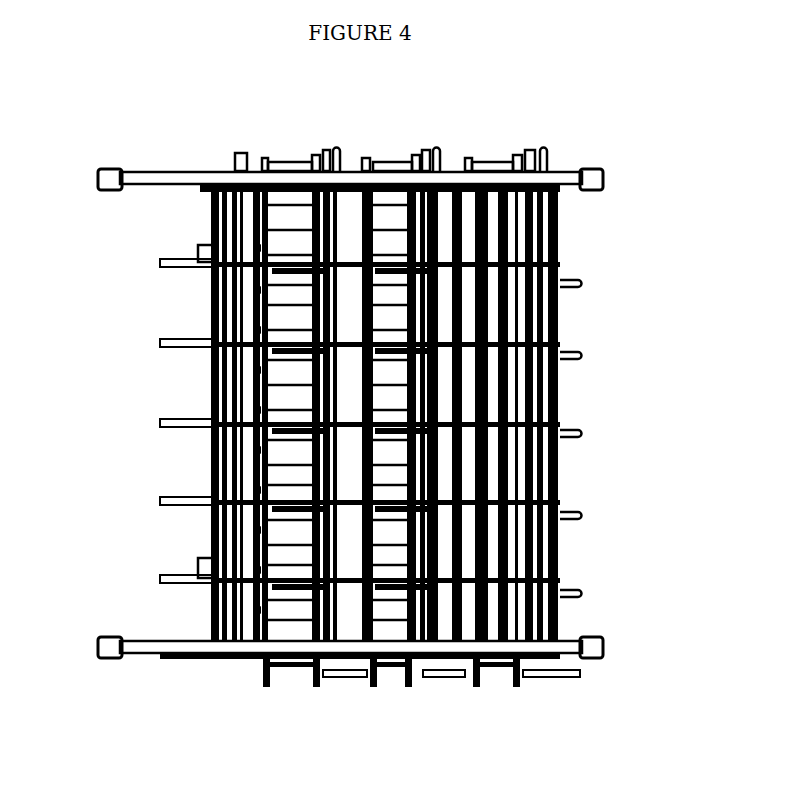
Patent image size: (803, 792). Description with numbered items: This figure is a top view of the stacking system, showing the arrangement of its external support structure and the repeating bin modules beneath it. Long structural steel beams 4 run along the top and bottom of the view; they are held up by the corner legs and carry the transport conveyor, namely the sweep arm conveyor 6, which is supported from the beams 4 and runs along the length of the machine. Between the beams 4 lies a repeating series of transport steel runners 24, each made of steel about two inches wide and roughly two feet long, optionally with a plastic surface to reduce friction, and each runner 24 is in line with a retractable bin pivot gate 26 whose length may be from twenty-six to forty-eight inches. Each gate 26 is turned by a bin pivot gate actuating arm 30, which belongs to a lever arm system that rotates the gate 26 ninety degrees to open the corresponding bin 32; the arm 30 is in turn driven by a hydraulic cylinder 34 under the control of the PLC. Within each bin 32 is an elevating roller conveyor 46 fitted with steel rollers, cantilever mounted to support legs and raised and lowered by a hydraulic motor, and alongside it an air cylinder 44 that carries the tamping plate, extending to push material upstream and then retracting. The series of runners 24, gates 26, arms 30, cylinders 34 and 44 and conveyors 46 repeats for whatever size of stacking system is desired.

The long structural steel beams 4 is at (178, 174).
The sweep arm conveyor 6 is at (210, 295).
The transport steel runners 24 is at (178, 259).
The retractable bin pivot gate 26 is at (305, 268).
The bin pivot gate actuating arm 30 is at (318, 347).
The bin 32 is at (390, 143).
The hydraulic cylinder 34 is at (338, 148).
The air cylinder 44 is at (581, 434).
The elevating roller conveyor 46 is at (276, 157).